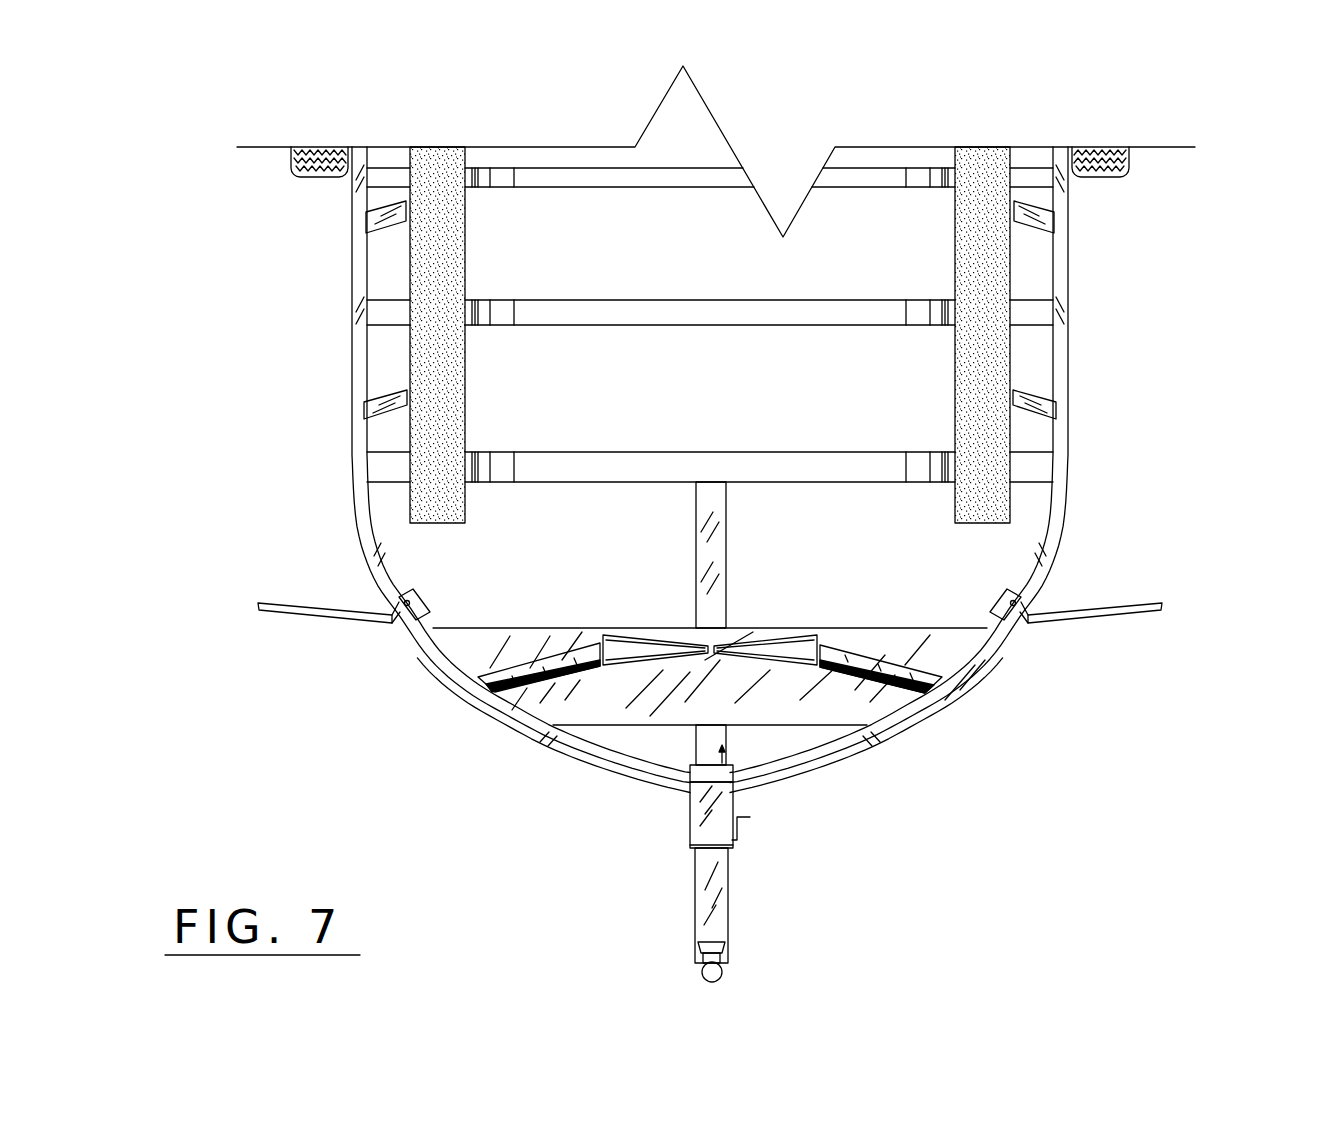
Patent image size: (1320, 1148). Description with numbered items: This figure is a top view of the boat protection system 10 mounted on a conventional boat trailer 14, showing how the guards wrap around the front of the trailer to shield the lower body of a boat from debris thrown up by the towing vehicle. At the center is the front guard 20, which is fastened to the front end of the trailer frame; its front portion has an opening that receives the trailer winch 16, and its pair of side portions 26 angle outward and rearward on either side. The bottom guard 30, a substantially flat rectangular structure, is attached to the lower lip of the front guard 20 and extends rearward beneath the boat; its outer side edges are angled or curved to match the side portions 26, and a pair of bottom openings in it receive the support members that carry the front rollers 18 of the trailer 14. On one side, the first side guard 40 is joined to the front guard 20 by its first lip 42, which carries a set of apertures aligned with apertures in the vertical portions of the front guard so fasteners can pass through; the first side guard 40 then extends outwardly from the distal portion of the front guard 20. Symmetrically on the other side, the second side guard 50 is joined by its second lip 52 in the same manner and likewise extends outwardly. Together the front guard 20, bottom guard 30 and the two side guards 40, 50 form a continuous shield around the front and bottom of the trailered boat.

The boat protection system 10 is at (1212, 444).
The trailer 14 is at (1074, 426).
The winch 16 is at (725, 833).
The front rollers 18 is at (547, 690).
The front guard 20 is at (441, 675).
The side portions 26 is at (478, 695).
The bottom guard 30 is at (958, 648).
The first side guard 40 is at (310, 613).
The first lip 42 is at (398, 625).
The second side guard 50 is at (1120, 600).
The second lip 52 is at (1023, 618).